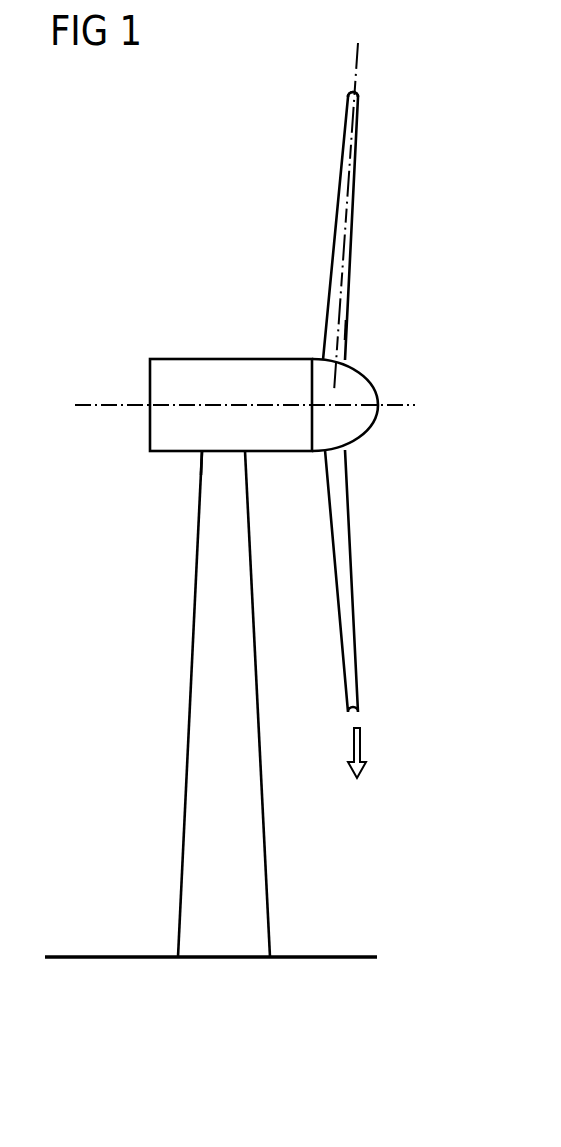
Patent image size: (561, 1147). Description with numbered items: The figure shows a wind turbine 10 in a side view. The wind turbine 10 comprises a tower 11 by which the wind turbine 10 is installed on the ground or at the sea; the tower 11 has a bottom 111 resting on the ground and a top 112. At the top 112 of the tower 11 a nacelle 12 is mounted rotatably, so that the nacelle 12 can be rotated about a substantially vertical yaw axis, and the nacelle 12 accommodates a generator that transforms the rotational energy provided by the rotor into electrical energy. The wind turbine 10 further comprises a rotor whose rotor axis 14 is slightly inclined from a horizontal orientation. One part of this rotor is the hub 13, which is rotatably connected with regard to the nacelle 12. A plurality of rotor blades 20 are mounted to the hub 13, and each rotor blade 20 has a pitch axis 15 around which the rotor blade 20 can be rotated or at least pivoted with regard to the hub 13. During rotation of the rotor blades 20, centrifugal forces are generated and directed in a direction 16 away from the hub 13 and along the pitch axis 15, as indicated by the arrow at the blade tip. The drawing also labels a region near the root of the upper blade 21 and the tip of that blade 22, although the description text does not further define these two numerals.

The wind turbine 10 is at (138, 602).
The tower 11 is at (243, 790).
The bottom 111 is at (257, 937).
The top 112 is at (204, 468).
The nacelle 12 is at (200, 357).
The hub 13 is at (373, 381).
The rotor axis 14 is at (90, 404).
The pitch axis 15 is at (356, 60).
The direction 16 is at (361, 745).
The rotor blade 20 is at (365, 228).
The blade root 21 is at (348, 328).
The blade tip 22 is at (360, 105).